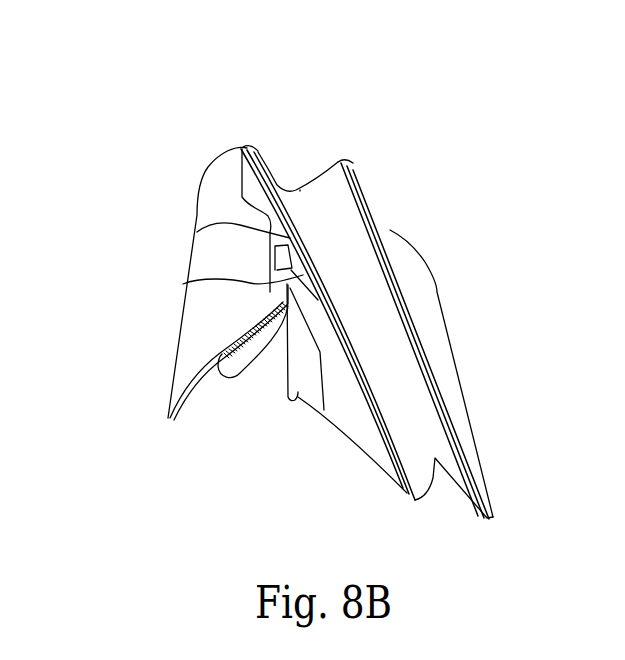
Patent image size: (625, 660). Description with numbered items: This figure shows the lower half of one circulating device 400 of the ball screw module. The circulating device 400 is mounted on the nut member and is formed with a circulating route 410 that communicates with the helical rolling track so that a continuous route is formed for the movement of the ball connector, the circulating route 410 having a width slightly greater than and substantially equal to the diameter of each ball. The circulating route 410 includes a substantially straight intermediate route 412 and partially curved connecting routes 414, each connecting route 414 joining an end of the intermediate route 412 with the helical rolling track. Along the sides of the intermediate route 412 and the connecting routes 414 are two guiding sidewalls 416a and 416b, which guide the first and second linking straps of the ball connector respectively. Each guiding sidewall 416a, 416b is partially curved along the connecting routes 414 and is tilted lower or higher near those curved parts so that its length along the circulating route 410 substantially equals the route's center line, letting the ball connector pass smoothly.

The circulating device 400 is at (264, 398).
The circulating route 410 is at (288, 168).
The intermediate route 412 is at (334, 222).
The connecting route 414 is at (387, 378).
The guiding sidewall 416a is at (187, 281).
The guiding sidewall 416b is at (197, 232).